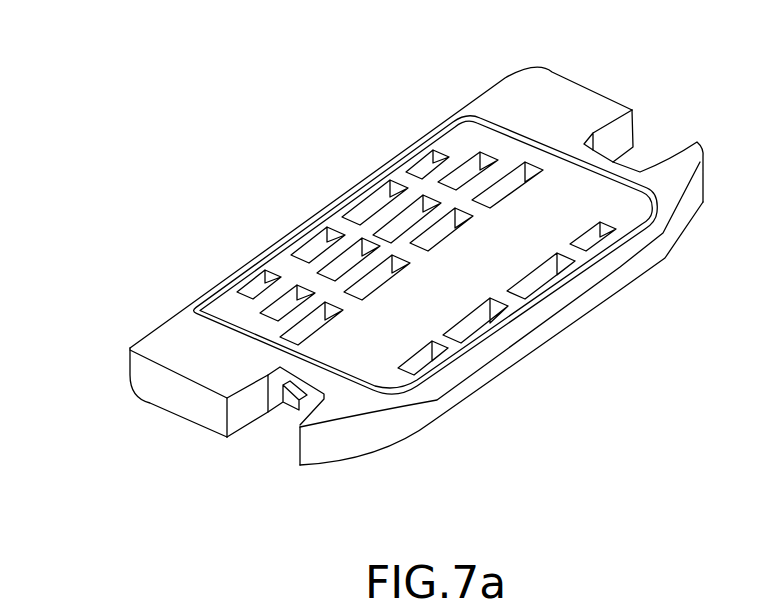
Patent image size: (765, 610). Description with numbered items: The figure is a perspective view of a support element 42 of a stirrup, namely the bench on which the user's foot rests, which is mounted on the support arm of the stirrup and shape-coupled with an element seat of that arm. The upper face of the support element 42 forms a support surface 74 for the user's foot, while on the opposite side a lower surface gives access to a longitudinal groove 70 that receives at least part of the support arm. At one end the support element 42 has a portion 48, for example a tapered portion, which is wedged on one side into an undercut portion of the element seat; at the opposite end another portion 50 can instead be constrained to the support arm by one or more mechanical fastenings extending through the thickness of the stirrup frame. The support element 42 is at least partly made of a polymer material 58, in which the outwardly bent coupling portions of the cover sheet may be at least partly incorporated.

The support element 42 is at (293, 143).
The portion of the support element 48 is at (303, 383).
The another portion of the support element 50 is at (618, 300).
The polymer material 58 is at (552, 110).
The longitudinal groove 70 is at (293, 418).
The support surface 74 is at (360, 320).